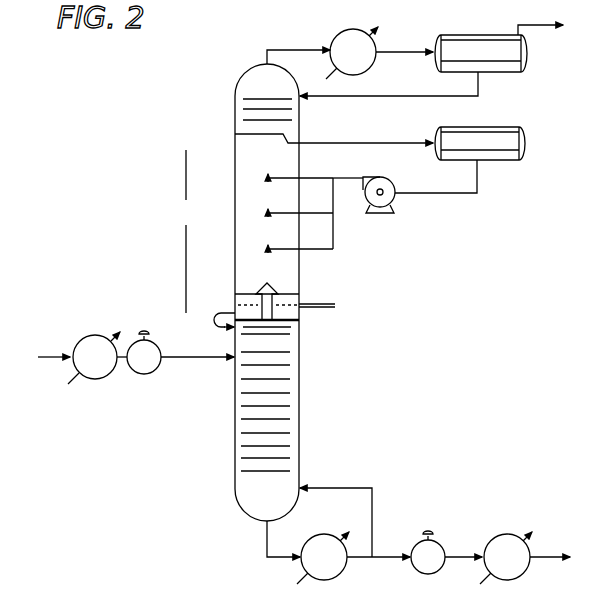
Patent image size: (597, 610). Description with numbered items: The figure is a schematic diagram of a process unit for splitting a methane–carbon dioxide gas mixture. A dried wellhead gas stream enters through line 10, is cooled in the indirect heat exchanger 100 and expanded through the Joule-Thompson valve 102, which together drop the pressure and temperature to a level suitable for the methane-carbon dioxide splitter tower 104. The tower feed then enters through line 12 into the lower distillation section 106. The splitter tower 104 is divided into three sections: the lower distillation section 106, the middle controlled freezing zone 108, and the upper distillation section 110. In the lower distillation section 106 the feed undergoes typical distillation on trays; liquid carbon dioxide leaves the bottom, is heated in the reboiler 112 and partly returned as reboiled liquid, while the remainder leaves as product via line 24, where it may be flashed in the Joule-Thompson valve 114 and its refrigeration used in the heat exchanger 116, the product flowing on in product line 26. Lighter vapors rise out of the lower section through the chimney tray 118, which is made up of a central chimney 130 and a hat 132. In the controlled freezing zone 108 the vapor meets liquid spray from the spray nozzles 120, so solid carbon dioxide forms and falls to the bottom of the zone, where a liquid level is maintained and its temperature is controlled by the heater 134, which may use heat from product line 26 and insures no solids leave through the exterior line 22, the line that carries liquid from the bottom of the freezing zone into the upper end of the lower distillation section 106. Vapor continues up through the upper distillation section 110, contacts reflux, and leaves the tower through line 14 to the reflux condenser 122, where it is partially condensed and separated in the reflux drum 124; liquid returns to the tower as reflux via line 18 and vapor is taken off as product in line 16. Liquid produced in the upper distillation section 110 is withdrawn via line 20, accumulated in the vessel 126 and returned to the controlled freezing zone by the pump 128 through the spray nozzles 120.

The methane-carbon dioxide splitter tower 104 is at (152, 152).
The upper distillation section 110 is at (186, 66).
The controlled freezing zone 108 is at (235, 320).
The lower distillation section 106 is at (183, 323).
The line 14 is at (295, 48).
The reflux condenser 122 is at (346, 30).
The reflux drum 124 is at (527, 60).
The line 16 is at (545, 28).
The line 18 is at (486, 90).
The line 20 is at (360, 142).
The vessel 126 is at (527, 146).
The pump 128 is at (393, 210).
The spray nozzles 120 is at (262, 186).
The central chimney 130 is at (258, 313).
The hat 132 is at (279, 288).
The heater 134 is at (323, 303).
The chimney tray 118 is at (300, 320).
The exterior line 22 is at (216, 313).
The line 10 is at (55, 352).
The indirect heat exchanger 100 is at (93, 334).
The Joule-Thompson valve 102 is at (143, 375).
The line 12 is at (212, 361).
The line 24 is at (385, 553).
The reboiler 112 is at (340, 573).
The Joule-Thompson valve 114 is at (439, 545).
The heat exchanger 116 is at (523, 573).
The product line 26 is at (545, 555).